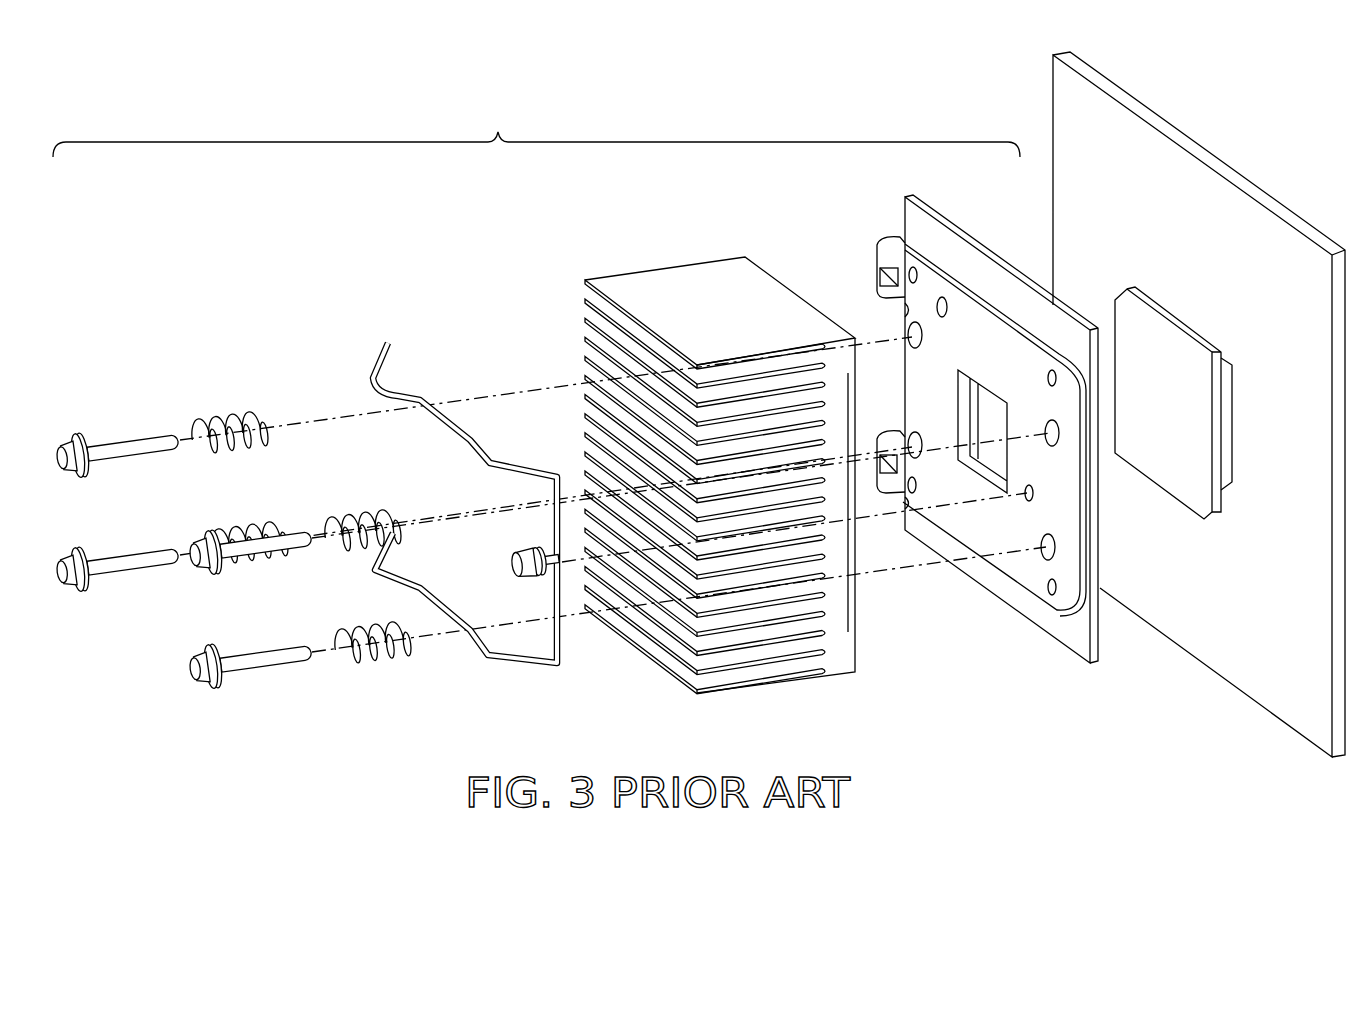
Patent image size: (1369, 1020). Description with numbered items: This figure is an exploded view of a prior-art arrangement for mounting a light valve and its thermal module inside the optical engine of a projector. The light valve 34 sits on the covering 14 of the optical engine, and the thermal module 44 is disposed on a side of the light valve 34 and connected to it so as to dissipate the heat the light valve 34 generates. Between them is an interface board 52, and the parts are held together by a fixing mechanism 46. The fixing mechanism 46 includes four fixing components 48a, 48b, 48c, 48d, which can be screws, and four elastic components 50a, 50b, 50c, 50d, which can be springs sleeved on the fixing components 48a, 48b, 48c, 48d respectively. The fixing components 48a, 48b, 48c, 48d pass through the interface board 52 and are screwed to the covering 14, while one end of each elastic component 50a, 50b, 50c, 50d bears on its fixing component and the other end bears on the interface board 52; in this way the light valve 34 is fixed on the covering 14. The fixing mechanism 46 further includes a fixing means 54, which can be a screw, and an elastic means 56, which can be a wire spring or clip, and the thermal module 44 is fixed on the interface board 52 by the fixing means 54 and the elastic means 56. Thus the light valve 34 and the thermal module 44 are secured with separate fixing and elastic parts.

The covering 14 is at (1160, 226).
The light valve 34 is at (1150, 412).
The thermal module 44 is at (717, 290).
The fixing mechanism 46 is at (498, 131).
The fixing component 48a is at (133, 560).
The fixing component 48b is at (265, 655).
The fixing component 48c is at (125, 441).
The fixing component 48d is at (278, 545).
The elastic component 50a is at (230, 528).
The elastic component 50b is at (345, 626).
The elastic component 50c is at (238, 416).
The elastic component 50d is at (363, 513).
The interface board 52 is at (972, 328).
The fixing means 54 is at (535, 574).
The elastic means 56 is at (527, 658).